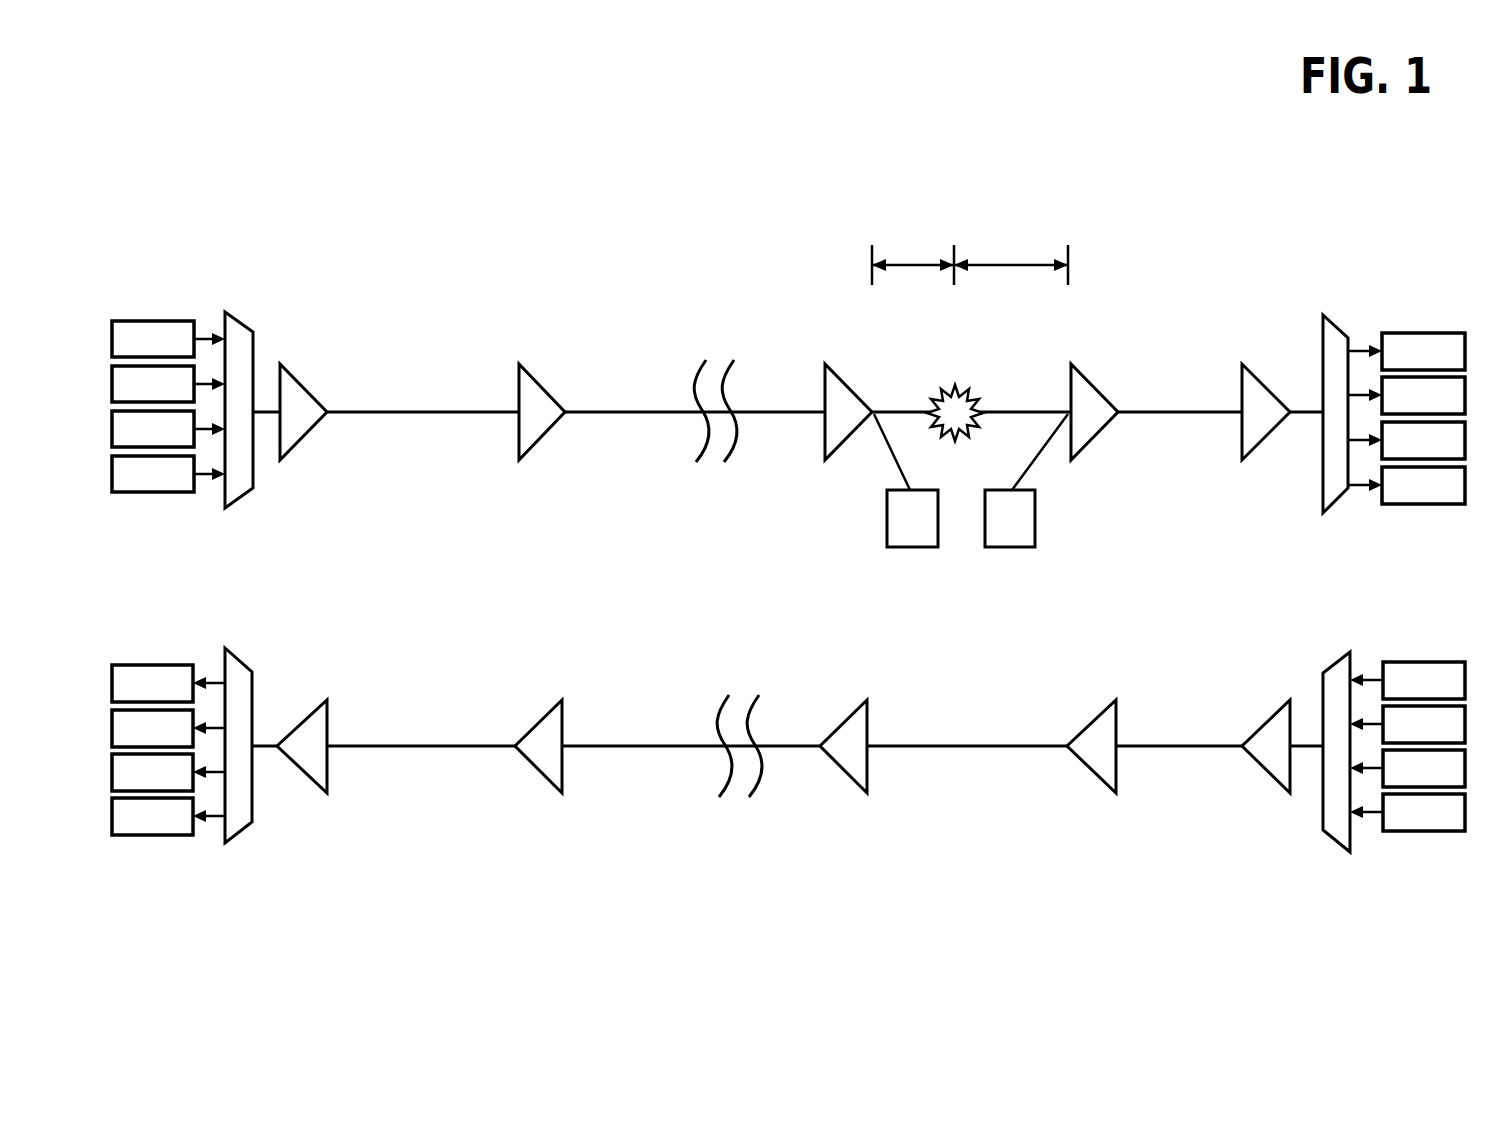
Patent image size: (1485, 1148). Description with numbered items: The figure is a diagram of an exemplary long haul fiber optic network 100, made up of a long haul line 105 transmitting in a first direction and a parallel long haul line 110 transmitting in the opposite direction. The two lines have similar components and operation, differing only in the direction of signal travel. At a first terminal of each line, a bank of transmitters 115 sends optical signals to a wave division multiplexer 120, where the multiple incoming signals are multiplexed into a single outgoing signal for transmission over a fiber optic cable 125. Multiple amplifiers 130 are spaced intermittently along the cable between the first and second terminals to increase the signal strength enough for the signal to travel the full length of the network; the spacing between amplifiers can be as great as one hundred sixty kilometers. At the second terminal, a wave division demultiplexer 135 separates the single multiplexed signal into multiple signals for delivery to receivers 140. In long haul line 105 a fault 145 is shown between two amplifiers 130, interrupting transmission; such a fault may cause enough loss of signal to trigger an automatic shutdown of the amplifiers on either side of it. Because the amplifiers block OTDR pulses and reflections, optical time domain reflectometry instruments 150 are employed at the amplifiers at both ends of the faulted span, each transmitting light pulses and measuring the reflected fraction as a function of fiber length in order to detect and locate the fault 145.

The long haul fiber optic network 100 is at (497, 104).
The long haul line 105 is at (294, 218).
The parallel long haul line 110 is at (327, 912).
The transmitters 115 is at (145, 318).
The wave division multiplexer 120 is at (245, 322).
The fiber optic cable 125 is at (437, 412).
The amplifiers 130 is at (521, 366).
The wave division demultiplexer 135 is at (1335, 318).
The receivers 140 is at (1447, 333).
The fault 145 is at (965, 392).
The OTDR instruments 150 is at (1000, 547).